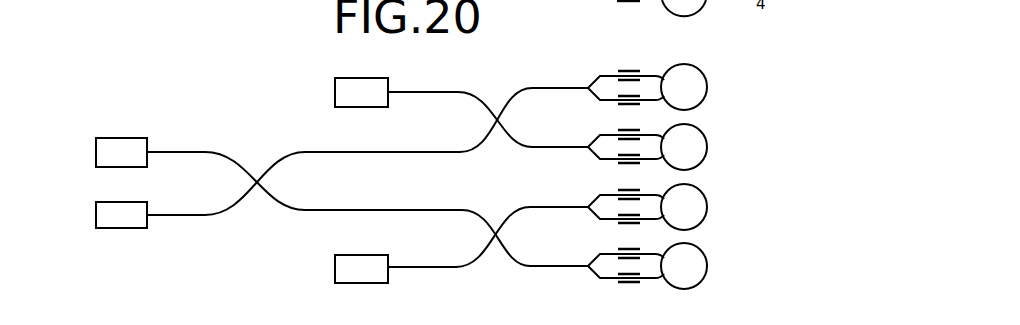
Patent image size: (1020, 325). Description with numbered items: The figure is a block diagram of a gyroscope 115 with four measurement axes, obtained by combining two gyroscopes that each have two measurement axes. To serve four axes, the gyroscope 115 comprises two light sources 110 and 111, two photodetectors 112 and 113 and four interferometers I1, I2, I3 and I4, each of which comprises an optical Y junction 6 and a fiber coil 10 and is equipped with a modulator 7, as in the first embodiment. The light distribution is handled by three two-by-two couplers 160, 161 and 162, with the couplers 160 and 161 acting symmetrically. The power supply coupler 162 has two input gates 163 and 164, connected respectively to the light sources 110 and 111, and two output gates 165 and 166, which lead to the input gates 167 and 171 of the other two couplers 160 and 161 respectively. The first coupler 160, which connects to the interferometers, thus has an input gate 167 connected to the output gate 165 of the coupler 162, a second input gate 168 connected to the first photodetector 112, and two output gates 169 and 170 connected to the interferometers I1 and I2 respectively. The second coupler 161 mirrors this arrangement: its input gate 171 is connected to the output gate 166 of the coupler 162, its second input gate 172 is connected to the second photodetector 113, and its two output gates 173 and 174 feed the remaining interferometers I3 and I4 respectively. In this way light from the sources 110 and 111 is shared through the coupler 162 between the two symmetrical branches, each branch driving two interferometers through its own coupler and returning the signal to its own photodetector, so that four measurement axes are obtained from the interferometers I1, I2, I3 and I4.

The optical Y junction 6 is at (588, 80).
The modulator 7 is at (637, 95).
The fiber coil 10 is at (704, 107).
The light source 110 is at (131, 138).
The light source 111 is at (131, 228).
The photodetector 112 is at (370, 78).
The photodetector 113 is at (335, 270).
The gyroscope 115 is at (297, 97).
The first coupler 160 is at (495, 108).
The second coupler 161 is at (494, 220).
The power supply coupler 162 is at (265, 170).
The input gate 163 is at (231, 151).
The input gate 164 is at (240, 196).
The output gate 165 is at (306, 151).
The output gate 166 is at (294, 207).
The input gate 167 is at (477, 142).
The second input gate 168 is at (462, 91).
The output gate 169 is at (519, 88).
The output gate 170 is at (514, 139).
The input gate 171 is at (479, 209).
The second input gate 172 is at (476, 255).
The output gate 173 is at (519, 206).
The output gate 174 is at (516, 264).
The interferometer I1 is at (713, 78).
The interferometer I2 is at (713, 152).
The interferometer I3 is at (713, 200).
The interferometer I4 is at (713, 262).